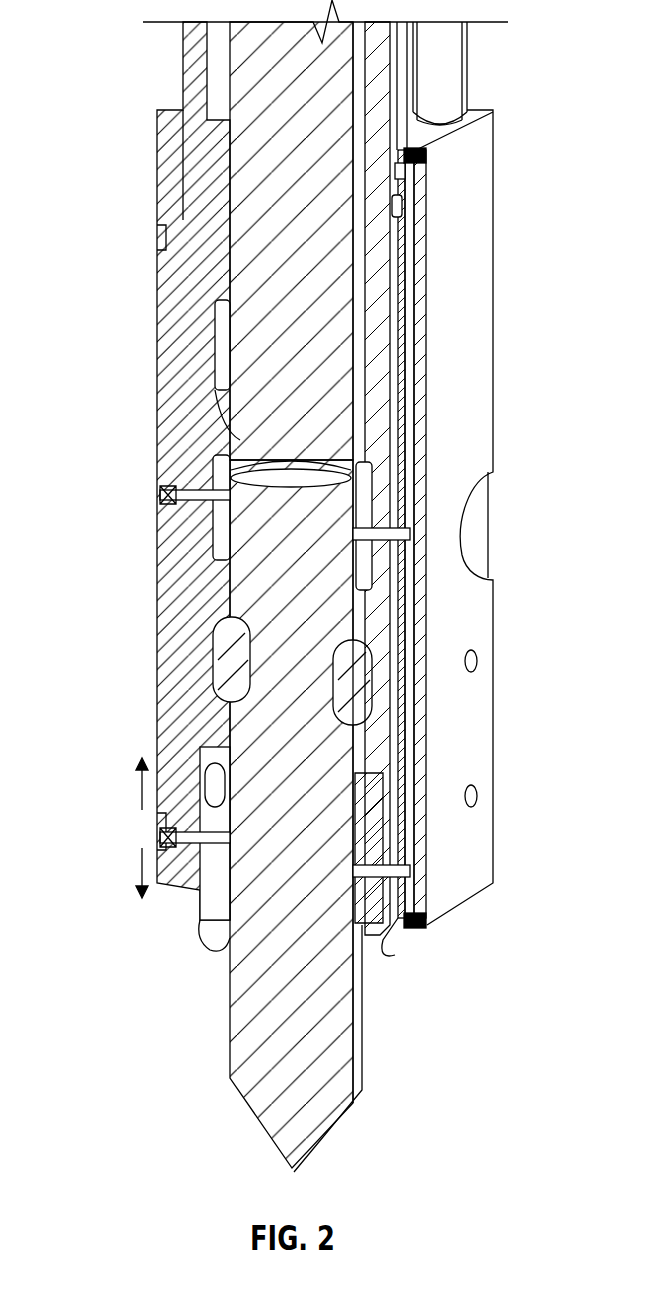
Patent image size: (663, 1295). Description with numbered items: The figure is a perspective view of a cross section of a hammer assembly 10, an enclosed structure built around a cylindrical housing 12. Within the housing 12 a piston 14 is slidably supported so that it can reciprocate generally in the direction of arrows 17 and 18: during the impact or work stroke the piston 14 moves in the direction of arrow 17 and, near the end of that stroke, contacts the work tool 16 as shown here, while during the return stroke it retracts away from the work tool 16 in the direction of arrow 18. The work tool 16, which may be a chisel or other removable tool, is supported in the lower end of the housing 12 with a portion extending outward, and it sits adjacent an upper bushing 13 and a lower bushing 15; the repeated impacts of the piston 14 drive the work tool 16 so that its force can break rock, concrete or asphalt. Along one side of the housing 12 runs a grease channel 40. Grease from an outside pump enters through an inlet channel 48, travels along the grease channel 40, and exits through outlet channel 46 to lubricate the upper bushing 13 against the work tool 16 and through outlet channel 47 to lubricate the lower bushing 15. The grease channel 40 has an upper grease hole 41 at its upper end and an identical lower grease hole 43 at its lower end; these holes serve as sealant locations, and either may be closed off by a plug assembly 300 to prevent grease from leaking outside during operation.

The hammer assembly 10 is at (100, 745).
The cylindrical housing 12 is at (482, 680).
The upper bushing 13 is at (383, 563).
The piston 14 is at (240, 222).
The lower bushing 15 is at (372, 818).
The work tool 16 is at (240, 1018).
The arrow 17 is at (140, 862).
The arrow 18 is at (140, 785).
The grease channel 40 is at (410, 313).
The upper grease hole 41 is at (405, 168).
The lower grease hole 43 is at (420, 918).
The outlet channel 46 is at (403, 537).
The outlet channel 47 is at (386, 868).
The inlet channel 48 is at (402, 205).
The plug assembly 300 is at (410, 155).